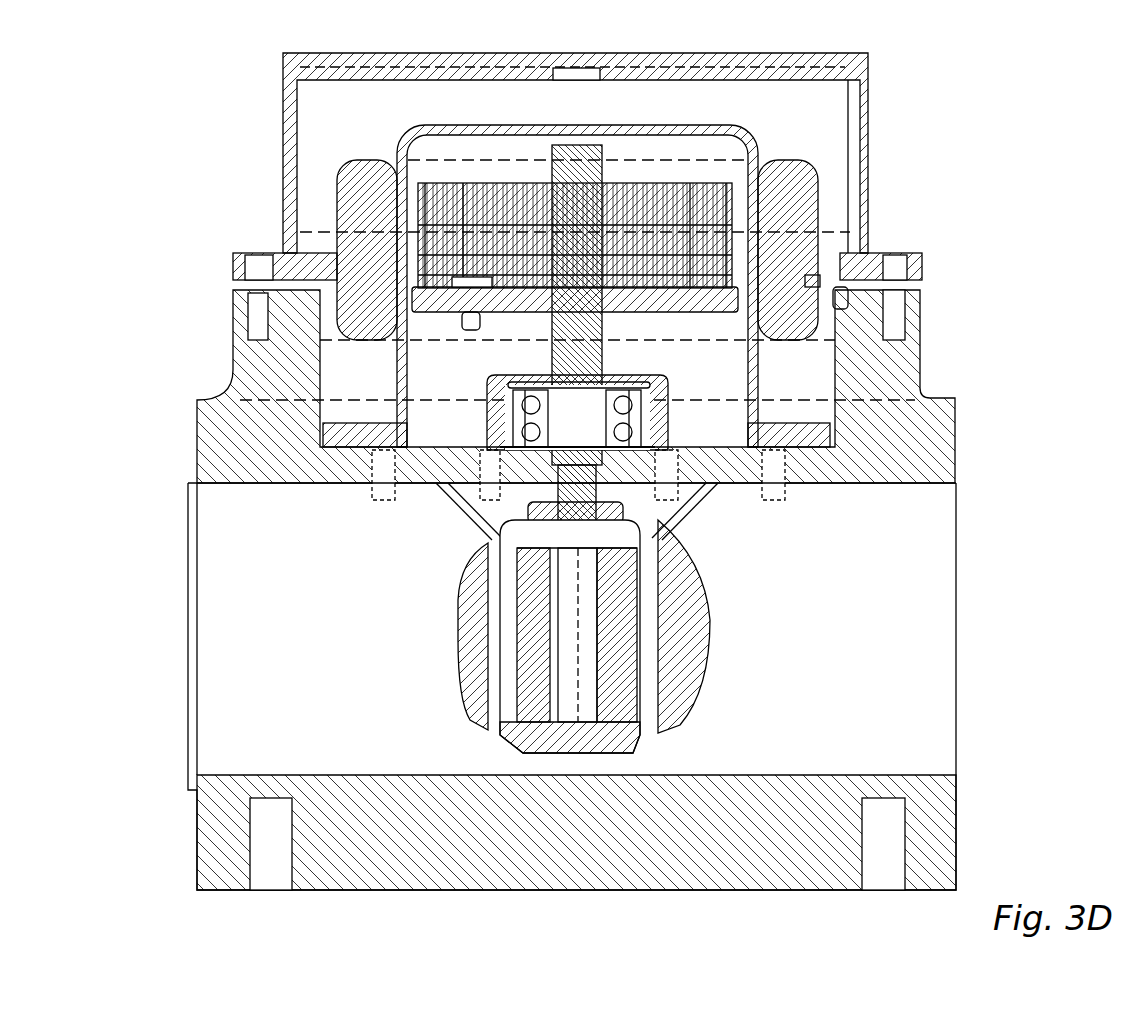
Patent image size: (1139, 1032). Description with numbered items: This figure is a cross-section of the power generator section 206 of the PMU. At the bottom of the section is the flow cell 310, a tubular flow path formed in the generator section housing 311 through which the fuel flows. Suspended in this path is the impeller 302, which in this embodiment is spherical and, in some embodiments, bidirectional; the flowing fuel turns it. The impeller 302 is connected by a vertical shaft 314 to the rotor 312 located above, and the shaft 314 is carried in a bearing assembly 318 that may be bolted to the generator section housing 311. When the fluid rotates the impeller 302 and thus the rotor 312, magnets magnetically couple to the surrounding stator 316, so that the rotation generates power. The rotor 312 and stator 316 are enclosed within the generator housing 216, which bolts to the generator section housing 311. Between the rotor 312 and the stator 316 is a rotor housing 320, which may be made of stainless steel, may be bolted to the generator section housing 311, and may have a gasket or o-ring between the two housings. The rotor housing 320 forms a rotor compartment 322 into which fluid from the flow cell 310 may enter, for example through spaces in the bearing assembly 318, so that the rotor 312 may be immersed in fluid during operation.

The power generator section 206 is at (556, 456).
The generator housing 216 is at (345, 30).
The impeller 302 is at (560, 538).
The flow cell 310 is at (920, 618).
The generator section housing 311 is at (918, 410).
The rotor 312 is at (510, 183).
The shaft 314 is at (548, 353).
The stator 316 is at (345, 222).
The bearing assembly 318 is at (560, 450).
The rotor housing 320 is at (460, 125).
The rotor compartment 322 is at (652, 152).